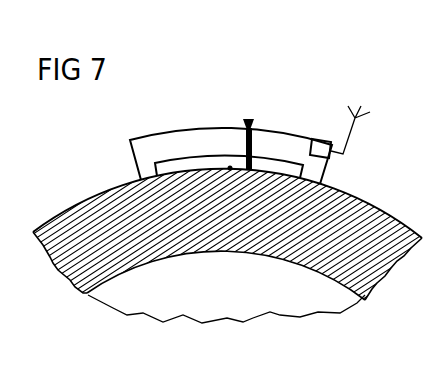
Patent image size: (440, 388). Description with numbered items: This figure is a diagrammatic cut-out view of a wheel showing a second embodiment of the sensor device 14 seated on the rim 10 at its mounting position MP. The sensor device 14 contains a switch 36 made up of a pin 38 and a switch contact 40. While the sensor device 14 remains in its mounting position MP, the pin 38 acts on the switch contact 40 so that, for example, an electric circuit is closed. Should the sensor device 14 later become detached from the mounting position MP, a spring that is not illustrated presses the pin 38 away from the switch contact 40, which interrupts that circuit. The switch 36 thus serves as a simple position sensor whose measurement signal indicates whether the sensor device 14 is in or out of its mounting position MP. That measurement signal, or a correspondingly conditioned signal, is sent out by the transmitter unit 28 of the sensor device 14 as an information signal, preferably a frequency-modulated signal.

The rim 10 is at (251, 243).
The sensor device 14 is at (173, 140).
The pin 38 is at (245, 148).
The switch 36 is at (248, 118).
The switch contact 40 is at (255, 143).
The transmitter unit 28 is at (321, 142).
The mounting position MP is at (230, 168).